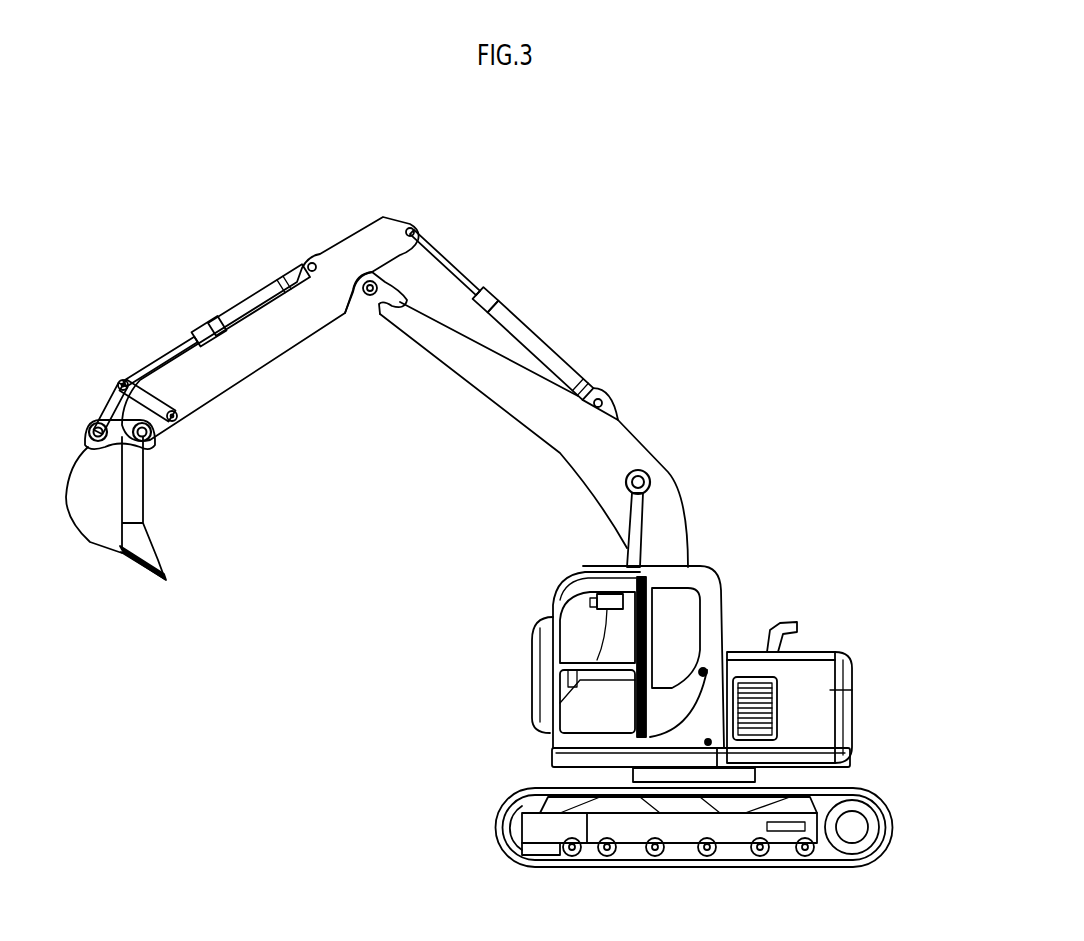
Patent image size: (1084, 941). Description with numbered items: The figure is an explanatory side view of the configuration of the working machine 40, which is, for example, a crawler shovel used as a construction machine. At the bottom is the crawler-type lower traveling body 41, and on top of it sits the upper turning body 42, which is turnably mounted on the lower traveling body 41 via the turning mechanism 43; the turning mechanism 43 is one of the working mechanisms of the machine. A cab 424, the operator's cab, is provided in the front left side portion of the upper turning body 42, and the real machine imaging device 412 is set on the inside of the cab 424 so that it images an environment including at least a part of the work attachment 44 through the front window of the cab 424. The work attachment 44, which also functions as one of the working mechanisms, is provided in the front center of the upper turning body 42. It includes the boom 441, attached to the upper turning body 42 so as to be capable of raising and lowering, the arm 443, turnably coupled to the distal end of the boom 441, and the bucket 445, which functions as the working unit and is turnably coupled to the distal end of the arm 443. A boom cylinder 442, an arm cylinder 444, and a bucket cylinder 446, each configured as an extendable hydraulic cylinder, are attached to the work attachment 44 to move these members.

The working machine 40 is at (727, 180).
The lower traveling body 41 is at (517, 790).
The upper turning body 42 is at (875, 683).
The turning mechanism 43 is at (775, 775).
The work attachment 44 is at (521, 242).
The real machine imaging device 412 is at (608, 594).
The cab 424 is at (740, 548).
The boom 441 is at (672, 500).
The boom cylinder 442 is at (627, 546).
The arm 443 is at (267, 355).
The arm cylinder 444 is at (535, 337).
The bucket 445 is at (100, 530).
The bucket cylinder 446 is at (258, 290).